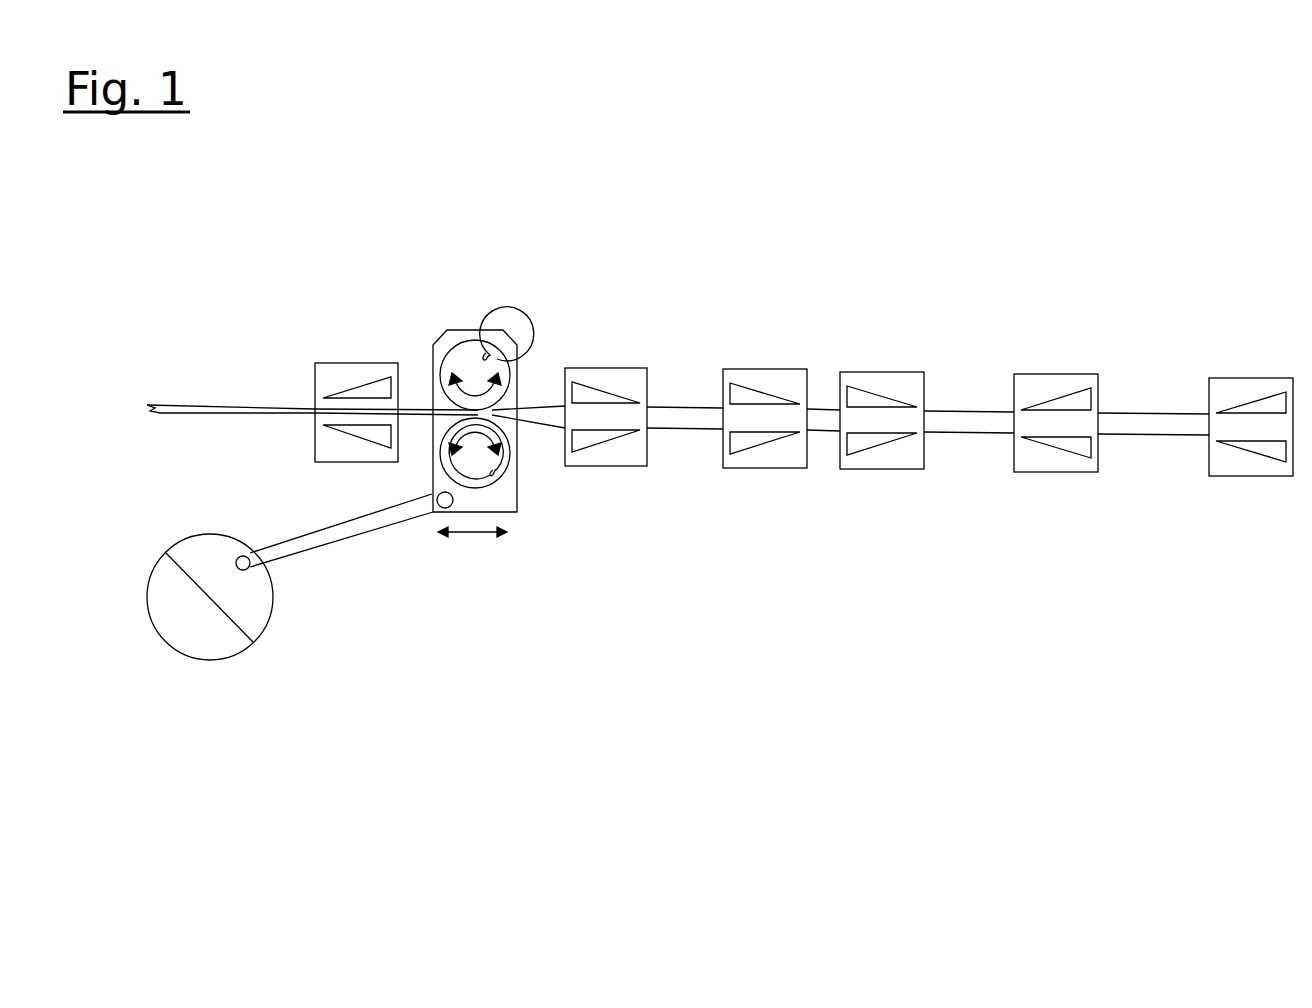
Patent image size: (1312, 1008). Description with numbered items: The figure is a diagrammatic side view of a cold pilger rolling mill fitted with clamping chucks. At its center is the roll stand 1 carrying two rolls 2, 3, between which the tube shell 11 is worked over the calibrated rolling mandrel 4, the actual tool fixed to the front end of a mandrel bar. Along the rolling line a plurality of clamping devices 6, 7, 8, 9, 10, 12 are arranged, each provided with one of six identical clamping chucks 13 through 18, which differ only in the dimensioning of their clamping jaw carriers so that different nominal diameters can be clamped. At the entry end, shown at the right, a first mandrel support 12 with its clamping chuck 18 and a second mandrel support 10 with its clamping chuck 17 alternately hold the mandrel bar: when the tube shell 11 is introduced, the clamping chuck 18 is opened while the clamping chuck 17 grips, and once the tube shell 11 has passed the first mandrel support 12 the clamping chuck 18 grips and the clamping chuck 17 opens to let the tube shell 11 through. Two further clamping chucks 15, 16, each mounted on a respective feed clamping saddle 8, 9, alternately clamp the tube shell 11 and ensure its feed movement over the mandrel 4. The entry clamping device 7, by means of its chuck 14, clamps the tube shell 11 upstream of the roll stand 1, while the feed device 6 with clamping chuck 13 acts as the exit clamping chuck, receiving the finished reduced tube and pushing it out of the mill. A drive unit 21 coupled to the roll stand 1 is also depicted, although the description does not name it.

The roll stand 1 is at (473, 498).
The roll 2 is at (475, 377).
The roll 3 is at (490, 490).
The calibrated rolling mandrel 4 is at (522, 418).
The feed device 6 is at (333, 368).
The entry clamping device 7 is at (623, 378).
The feed clamping saddle 8 is at (783, 383).
The feed clamping saddle 9 is at (883, 378).
The second mandrel support 10 is at (1032, 387).
The tube shell 11 is at (689, 418).
The first mandrel support 12 is at (1226, 387).
The clamping chuck 13 is at (373, 432).
The clamping chuck 14 is at (585, 440).
The clamping chuck 15 is at (740, 442).
The clamping chuck 16 is at (857, 443).
The clamping chuck 17 is at (1072, 442).
The clamping chuck 18 is at (1272, 448).
The drive motor 21 is at (207, 633).